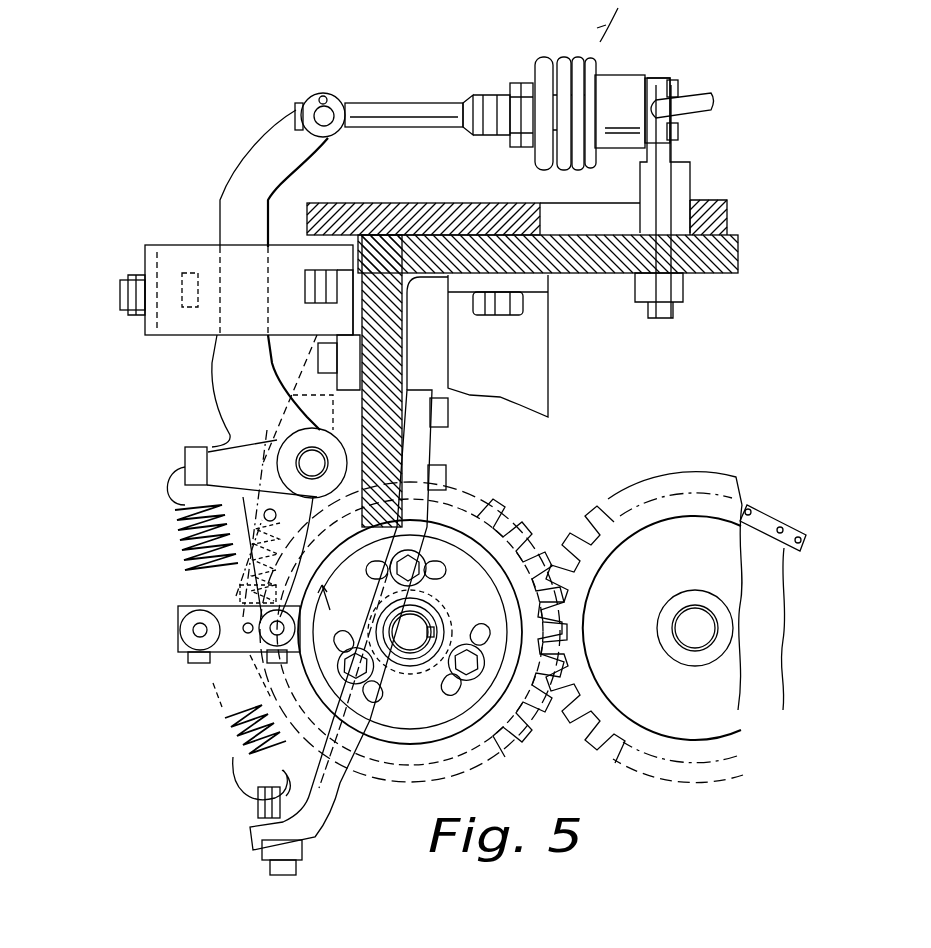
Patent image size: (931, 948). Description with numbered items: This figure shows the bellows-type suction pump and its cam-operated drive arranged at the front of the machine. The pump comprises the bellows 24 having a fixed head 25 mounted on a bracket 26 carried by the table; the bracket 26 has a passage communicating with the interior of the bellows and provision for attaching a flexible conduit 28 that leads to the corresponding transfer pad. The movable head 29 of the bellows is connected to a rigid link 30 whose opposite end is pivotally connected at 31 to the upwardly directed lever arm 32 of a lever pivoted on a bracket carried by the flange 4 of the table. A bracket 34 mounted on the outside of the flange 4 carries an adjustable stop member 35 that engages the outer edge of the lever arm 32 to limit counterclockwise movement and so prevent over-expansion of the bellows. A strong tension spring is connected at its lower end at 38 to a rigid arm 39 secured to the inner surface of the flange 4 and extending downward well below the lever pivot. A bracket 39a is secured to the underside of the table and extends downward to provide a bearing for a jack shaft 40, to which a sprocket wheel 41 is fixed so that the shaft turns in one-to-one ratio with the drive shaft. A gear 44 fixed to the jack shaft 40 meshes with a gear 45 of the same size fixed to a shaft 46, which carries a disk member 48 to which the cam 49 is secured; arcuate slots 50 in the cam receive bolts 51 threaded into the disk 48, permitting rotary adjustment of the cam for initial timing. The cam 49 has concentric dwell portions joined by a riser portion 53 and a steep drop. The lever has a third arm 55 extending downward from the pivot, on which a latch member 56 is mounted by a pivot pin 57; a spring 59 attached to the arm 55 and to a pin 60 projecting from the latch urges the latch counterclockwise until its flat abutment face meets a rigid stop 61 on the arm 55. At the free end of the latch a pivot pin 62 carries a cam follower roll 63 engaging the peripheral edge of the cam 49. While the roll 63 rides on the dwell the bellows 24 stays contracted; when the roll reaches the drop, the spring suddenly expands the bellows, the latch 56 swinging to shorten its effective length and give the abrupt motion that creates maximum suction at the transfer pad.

The flange 4 is at (407, 373).
The bellows 24 is at (575, 68).
The fixed head 25 is at (622, 82).
The bracket 26 is at (678, 183).
The flexible conduit 28 is at (702, 105).
The movable head 29 is at (537, 82).
The rigid link 30 is at (415, 110).
The pivotal connection 31 is at (330, 115).
The lever arm 32 is at (263, 135).
The bracket 34 is at (180, 250).
The adjustable stop member 35 is at (170, 330).
The spring connection 38 is at (250, 832).
The rigid arm 39 is at (322, 787).
The bracket 39a is at (546, 374).
The jack shaft 40 is at (694, 637).
The sprocket wheel 41 is at (765, 520).
The gear 44 is at (672, 530).
The gear 45 is at (490, 718).
The shaft 46 is at (412, 650).
The disk member 48 is at (447, 723).
The cam 49 is at (487, 568).
The arcuate slots 50 is at (447, 685).
The bolts 51 is at (458, 645).
The riser portion 53 is at (312, 463).
The third arm 55 is at (250, 492).
The latch member 56 is at (217, 643).
The pivot pin 57 is at (212, 443).
The spring 59 is at (243, 567).
The pin 60 is at (248, 635).
The rigid stop 61 is at (235, 592).
The pivot pin 62 is at (282, 628).
The cam follower roll 63 is at (388, 571).